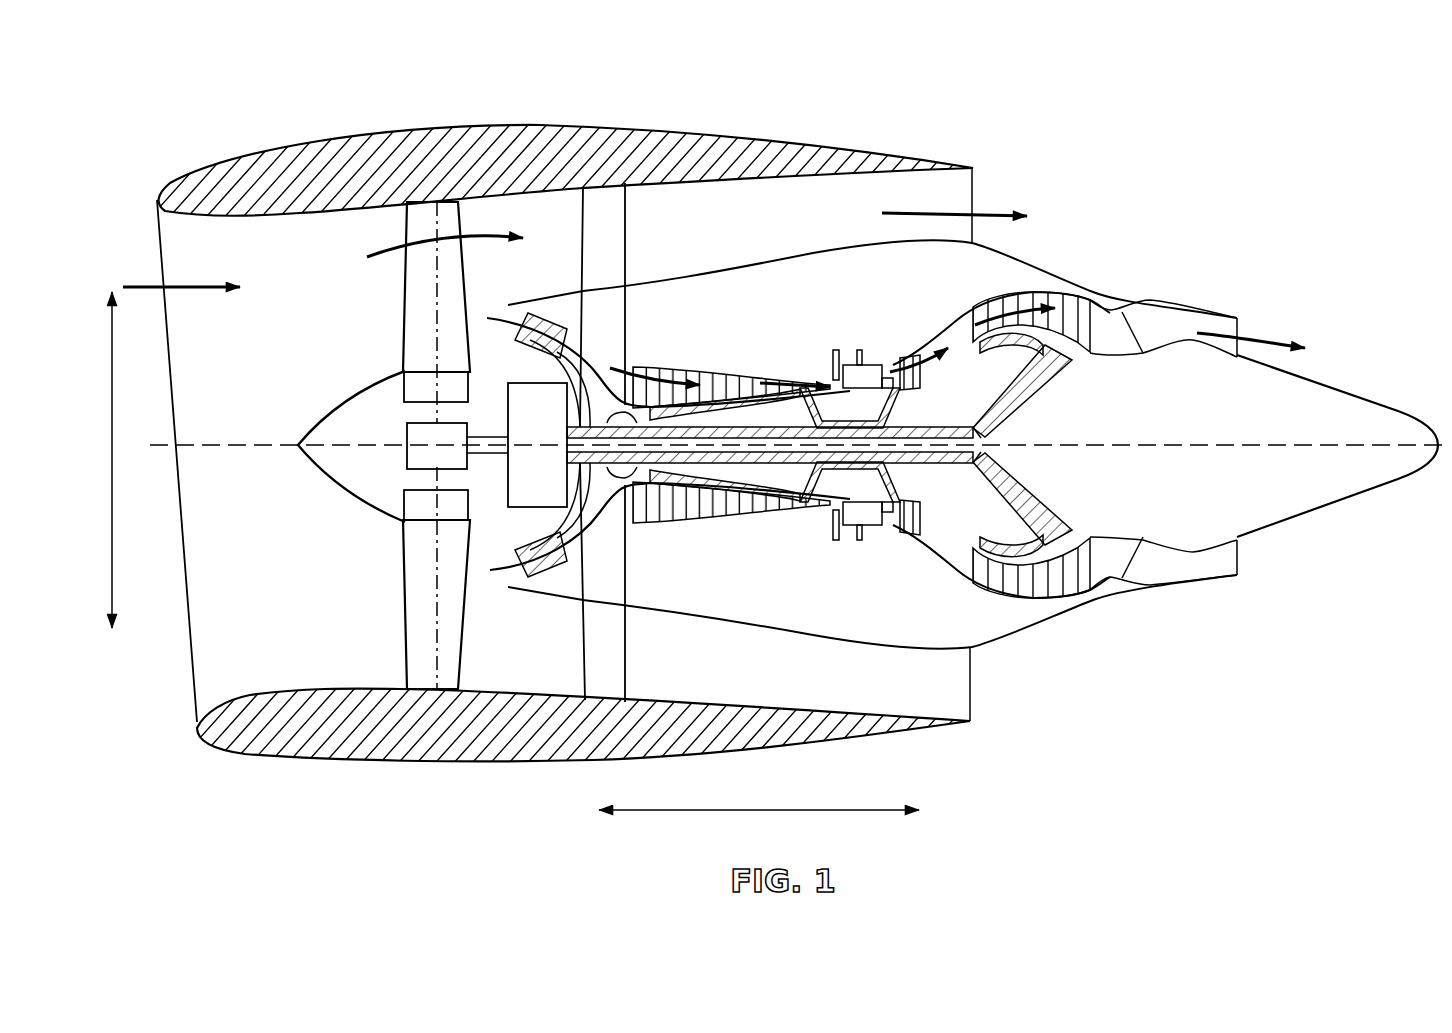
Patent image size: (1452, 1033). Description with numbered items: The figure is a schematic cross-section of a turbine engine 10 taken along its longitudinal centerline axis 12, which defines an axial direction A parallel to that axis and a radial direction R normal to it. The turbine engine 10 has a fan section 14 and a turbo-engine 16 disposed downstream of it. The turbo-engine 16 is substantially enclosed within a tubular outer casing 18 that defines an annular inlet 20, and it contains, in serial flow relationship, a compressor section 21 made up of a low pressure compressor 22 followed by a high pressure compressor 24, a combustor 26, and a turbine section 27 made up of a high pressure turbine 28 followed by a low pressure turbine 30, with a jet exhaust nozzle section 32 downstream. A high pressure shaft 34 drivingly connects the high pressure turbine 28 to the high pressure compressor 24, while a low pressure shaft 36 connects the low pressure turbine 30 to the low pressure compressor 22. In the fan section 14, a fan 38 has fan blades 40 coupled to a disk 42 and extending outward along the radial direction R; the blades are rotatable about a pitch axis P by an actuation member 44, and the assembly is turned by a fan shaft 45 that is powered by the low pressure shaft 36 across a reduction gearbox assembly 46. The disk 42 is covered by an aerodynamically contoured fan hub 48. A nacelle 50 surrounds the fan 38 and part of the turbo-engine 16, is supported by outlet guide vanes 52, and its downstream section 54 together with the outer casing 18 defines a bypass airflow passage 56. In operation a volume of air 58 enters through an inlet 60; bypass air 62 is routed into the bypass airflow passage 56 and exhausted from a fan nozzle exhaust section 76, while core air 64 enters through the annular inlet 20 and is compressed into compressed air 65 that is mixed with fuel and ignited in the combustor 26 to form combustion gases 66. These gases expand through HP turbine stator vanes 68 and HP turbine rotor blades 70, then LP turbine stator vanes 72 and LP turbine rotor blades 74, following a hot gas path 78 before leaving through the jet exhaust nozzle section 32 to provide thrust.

The turbine engine 10 is at (752, 456).
The longitudinal centerline axis 12 is at (1228, 440).
The fan section 14 is at (377, 218).
The turbo-engine 16 is at (855, 273).
The outer casing 18 is at (803, 635).
The annular inlet 20 is at (517, 572).
The compressor section 21 is at (712, 307).
The low pressure compressor 22 is at (550, 565).
The high pressure compressor 24 is at (657, 512).
The combustor 26 is at (853, 513).
The turbine section 27 is at (955, 293).
The high pressure turbine 28 is at (928, 530).
The low pressure turbine 30 is at (1062, 603).
The jet exhaust nozzle section 32 is at (1143, 570).
The high pressure shaft 34 is at (832, 410).
The low pressure shaft 36 is at (910, 427).
The fan 38 is at (287, 570).
The fan blades 40 is at (397, 590).
The disk 42 is at (420, 387).
The actuation member 44 is at (405, 452).
The fan shaft 45 is at (477, 433).
The gearbox assembly 46 is at (523, 393).
The fan hub 48 is at (327, 480).
The nacelle 50 is at (420, 758).
The outlet guide vanes 52 is at (627, 253).
The downstream section of the nacelle 54 is at (865, 150).
The bypass airflow passage 56 is at (775, 231).
The volume of air 58 is at (210, 283).
The inlet 60 is at (190, 647).
The bypass air 62 is at (917, 213).
The core air 64 is at (505, 307).
The compressed air 65 is at (680, 383).
The combustion gases 66 is at (1017, 310).
The HP turbine stator vanes 68 is at (893, 533).
The HP turbine rotor blades 70 is at (918, 510).
The LP turbine stator vanes 72 is at (980, 563).
The LP turbine rotor blades 74 is at (993, 570).
The fan nozzle exhaust section 76 is at (967, 197).
The hot gas path 78 is at (957, 342).
The pitch axis P is at (440, 225).
The radial direction R is at (113, 540).
The axial direction A is at (823, 812).